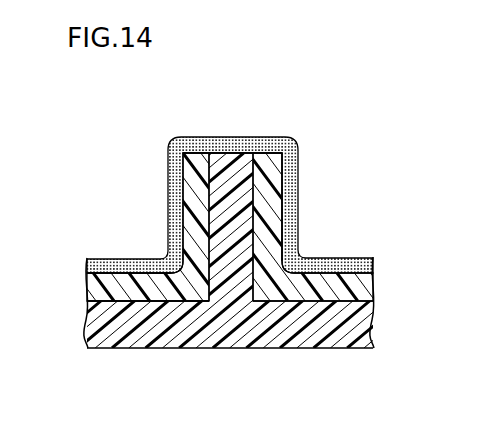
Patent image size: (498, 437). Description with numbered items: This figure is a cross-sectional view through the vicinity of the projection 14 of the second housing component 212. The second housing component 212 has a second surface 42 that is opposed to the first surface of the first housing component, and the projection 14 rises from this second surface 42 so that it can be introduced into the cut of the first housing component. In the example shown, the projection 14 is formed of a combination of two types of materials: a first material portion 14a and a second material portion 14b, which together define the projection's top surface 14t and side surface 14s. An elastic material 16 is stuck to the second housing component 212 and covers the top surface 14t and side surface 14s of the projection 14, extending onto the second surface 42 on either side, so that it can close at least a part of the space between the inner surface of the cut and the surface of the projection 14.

The projection 14 is at (240, 180).
The first material portion 14a is at (195, 163).
The second material portion 14b is at (230, 167).
The top surface 14t is at (244, 153).
The side surface 14s is at (283, 218).
The elastic material 16 is at (293, 175).
The second surface 42 is at (133, 278).
The second housing component 212 is at (160, 335).